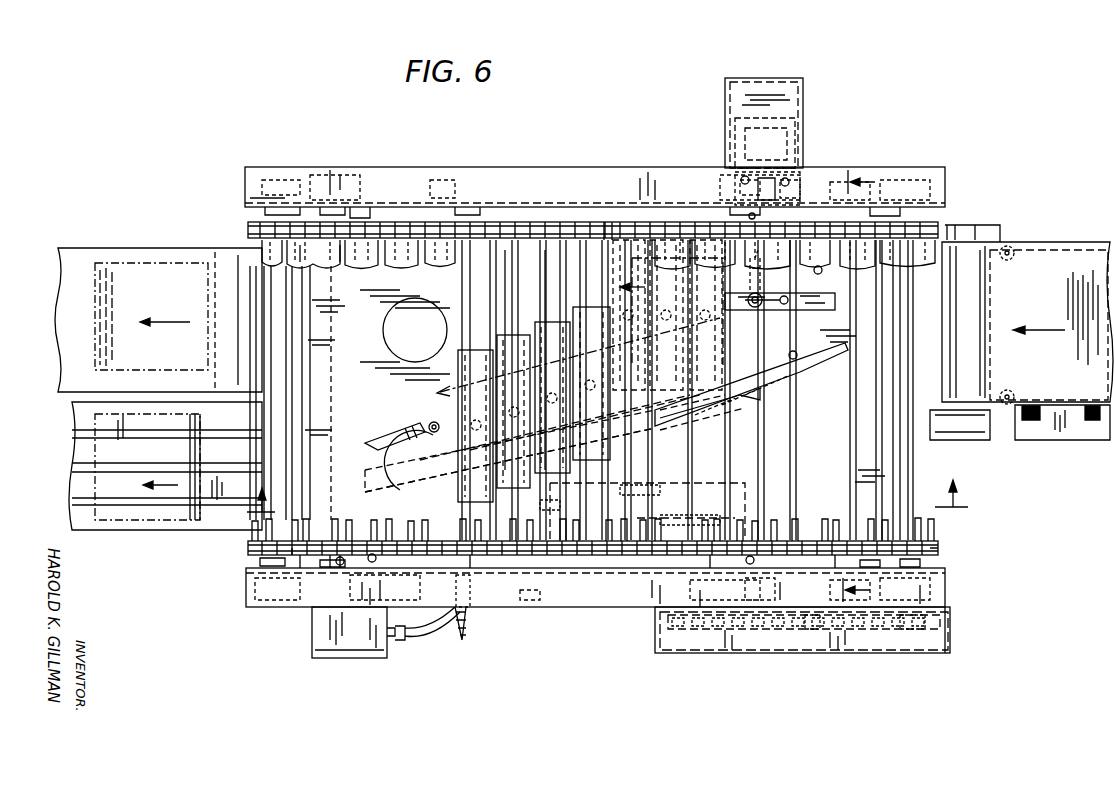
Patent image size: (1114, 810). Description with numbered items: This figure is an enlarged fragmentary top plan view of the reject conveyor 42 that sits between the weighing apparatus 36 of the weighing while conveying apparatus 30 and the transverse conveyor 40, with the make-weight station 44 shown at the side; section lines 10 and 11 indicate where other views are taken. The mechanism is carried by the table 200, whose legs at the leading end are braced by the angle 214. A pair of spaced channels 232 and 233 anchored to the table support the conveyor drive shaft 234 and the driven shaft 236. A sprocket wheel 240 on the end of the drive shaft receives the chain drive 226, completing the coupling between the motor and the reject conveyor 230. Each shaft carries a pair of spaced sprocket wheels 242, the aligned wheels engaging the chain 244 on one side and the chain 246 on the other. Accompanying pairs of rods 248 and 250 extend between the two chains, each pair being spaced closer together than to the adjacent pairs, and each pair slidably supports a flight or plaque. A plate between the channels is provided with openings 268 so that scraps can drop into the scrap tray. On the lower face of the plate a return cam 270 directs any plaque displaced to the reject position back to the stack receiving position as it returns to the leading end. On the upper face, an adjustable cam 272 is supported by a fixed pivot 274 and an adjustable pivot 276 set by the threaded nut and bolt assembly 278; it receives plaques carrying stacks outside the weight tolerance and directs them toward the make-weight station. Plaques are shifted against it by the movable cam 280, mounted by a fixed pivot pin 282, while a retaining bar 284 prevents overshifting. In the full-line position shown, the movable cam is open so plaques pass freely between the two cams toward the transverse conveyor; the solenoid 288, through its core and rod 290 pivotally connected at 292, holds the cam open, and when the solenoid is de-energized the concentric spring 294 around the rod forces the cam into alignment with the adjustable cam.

The section line 10- 10 is at (605, 496).
The section line 11- 11 is at (872, 387).
The weighing while conveying apparatus 30 is at (1042, 240).
The weighing apparatus 36 is at (1078, 412).
The transverse conveyor 40 is at (122, 246).
The reject conveyor 42 is at (455, 168).
The make-weight station 44 is at (140, 530).
The table 200 is at (510, 612).
The angle 214 is at (862, 653).
The chain drive 226 is at (812, 628).
The reject conveyor 230 is at (402, 222).
The channel 232 is at (428, 600).
The channel 233 is at (576, 178).
The conveyor drive shaft 234 is at (908, 455).
The driven shaft 236 is at (290, 410).
The sprocket wheel 240 is at (905, 628).
The sprocket wheels 242 is at (248, 230).
The chain 244 is at (604, 222).
The chain 246 is at (668, 558).
The rod 248 is at (505, 250).
The rod 250 is at (545, 250).
The openings 268 is at (388, 333).
The return cam 270 is at (418, 486).
The adjustable cam 272 is at (392, 440).
The fixed pivot 274 is at (720, 413).
The adjustable pivot 276 is at (433, 424).
The threaded nut and bolt assembly 278 is at (466, 615).
The movable cam 280 is at (818, 311).
The fixed pivot pin 282 is at (790, 299).
The retaining bar 284 is at (800, 363).
The solenoid 288 is at (803, 130).
The rod 290 is at (760, 212).
The pivotal connection 292 is at (757, 308).
The concentric spring 294 is at (805, 269).